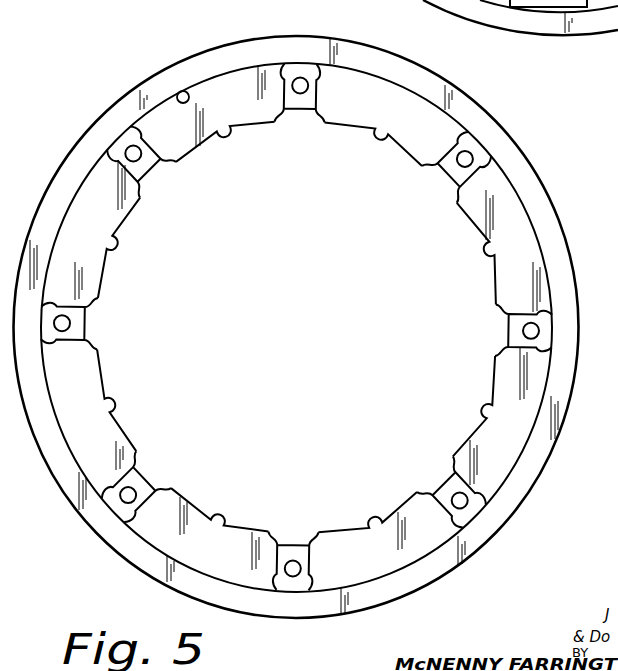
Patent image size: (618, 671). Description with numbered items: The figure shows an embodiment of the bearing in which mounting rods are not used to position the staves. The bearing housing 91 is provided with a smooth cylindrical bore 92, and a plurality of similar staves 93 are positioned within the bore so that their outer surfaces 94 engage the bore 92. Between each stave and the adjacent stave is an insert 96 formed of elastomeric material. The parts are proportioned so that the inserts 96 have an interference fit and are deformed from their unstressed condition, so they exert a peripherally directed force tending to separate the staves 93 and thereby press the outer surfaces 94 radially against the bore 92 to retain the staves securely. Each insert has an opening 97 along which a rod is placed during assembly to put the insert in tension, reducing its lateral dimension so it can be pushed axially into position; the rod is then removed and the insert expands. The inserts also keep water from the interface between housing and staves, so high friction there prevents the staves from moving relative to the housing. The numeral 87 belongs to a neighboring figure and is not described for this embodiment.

In FIG. 5, the bearing housing 91 is at (228, 53).
In FIG. 5, the cylindrical bore 92 is at (176, 97).
In FIG. 5, the stave 93 is at (365, 117).
In FIG. 5, the outer surface 94 is at (355, 67).
In FIG. 5, the insert 96 is at (452, 168).
In FIG. 5, the opening 97 is at (453, 147).
In FIG. 4, the ring member 87 is at (580, 12).